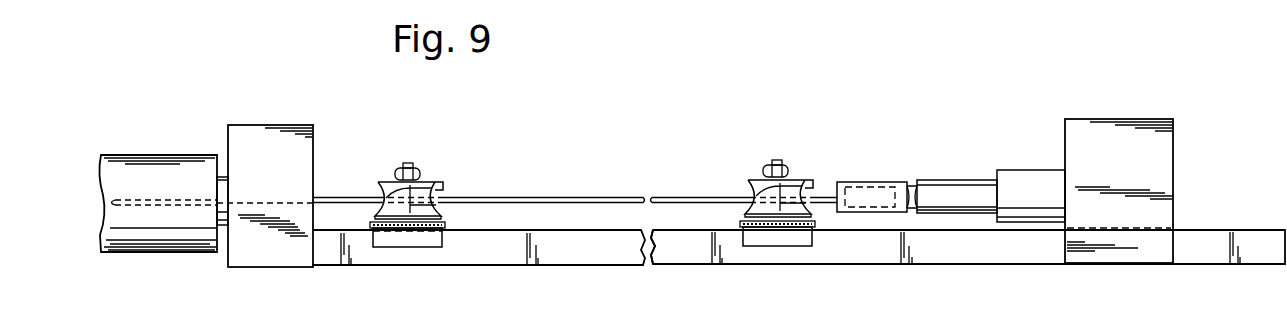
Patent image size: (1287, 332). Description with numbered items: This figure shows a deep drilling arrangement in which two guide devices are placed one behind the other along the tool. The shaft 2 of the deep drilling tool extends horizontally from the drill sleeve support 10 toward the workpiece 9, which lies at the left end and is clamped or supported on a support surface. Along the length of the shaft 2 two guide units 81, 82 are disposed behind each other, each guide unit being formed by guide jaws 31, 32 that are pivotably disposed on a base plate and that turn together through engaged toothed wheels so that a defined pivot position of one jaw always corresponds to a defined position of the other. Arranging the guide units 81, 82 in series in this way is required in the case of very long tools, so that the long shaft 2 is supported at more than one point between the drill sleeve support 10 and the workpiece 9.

The shaft 2 is at (572, 196).
The workpiece 9 is at (170, 166).
The drill sleeve support 10 is at (268, 136).
The guide jaw 31 is at (437, 186).
The guide jaw 32 is at (592, 234).
The guide unit 81 is at (399, 158).
The guide unit 82 is at (762, 157).